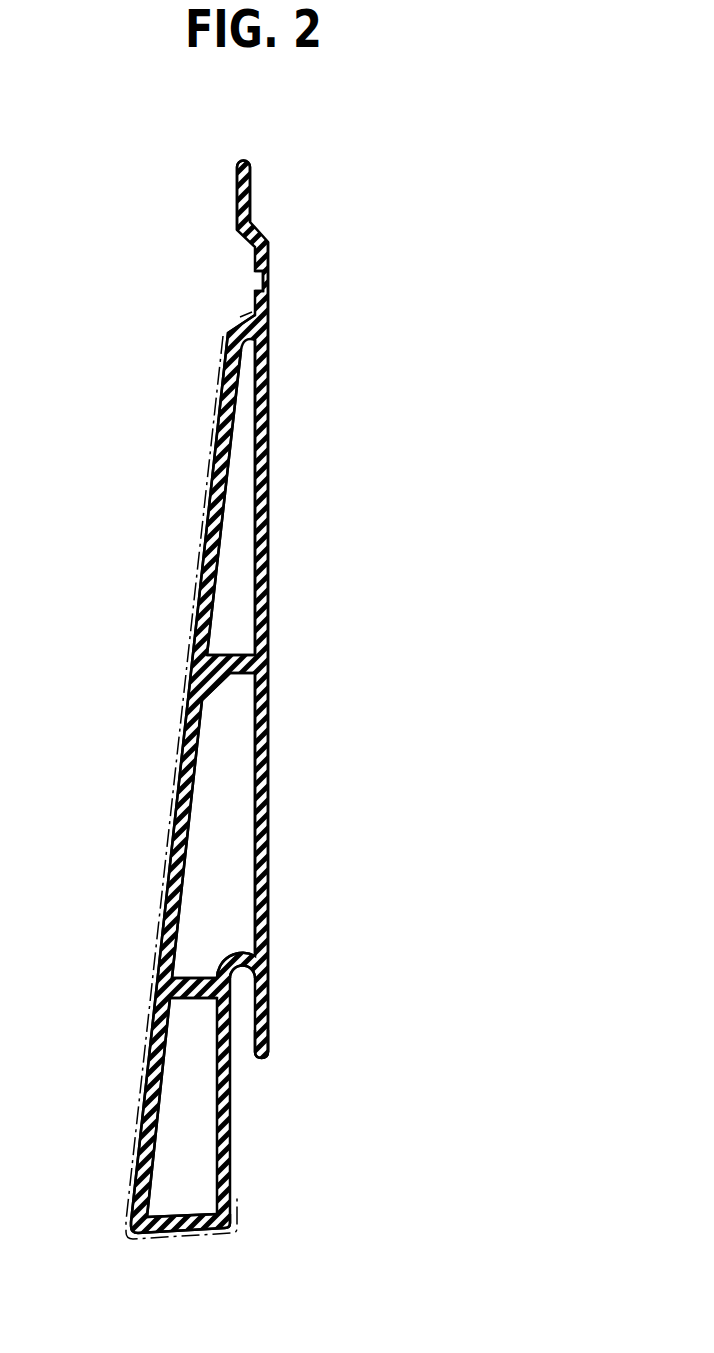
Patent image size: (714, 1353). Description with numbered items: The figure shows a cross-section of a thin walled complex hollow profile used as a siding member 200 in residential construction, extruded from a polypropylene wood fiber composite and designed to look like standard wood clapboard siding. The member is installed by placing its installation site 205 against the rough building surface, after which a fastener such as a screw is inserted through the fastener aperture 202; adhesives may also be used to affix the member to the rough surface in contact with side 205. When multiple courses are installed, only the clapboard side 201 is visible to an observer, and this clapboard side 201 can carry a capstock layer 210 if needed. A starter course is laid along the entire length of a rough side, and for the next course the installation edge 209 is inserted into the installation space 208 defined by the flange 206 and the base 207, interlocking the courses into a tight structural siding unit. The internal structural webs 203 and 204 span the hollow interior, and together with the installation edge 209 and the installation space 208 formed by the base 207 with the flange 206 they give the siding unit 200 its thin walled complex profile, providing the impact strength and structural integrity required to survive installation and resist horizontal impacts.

The siding member 200 is at (512, 328).
The clapboard side 201 is at (199, 622).
The fastener aperture 202 is at (254, 282).
The internal structural web 203 is at (196, 702).
The internal structural web 204 is at (197, 980).
The installation site 205 is at (269, 591).
The flange 206 is at (269, 1027).
The base 207 is at (133, 1234).
The installation space 208 is at (240, 982).
The installation edge 209 is at (253, 202).
The capstock layer 210 is at (160, 950).